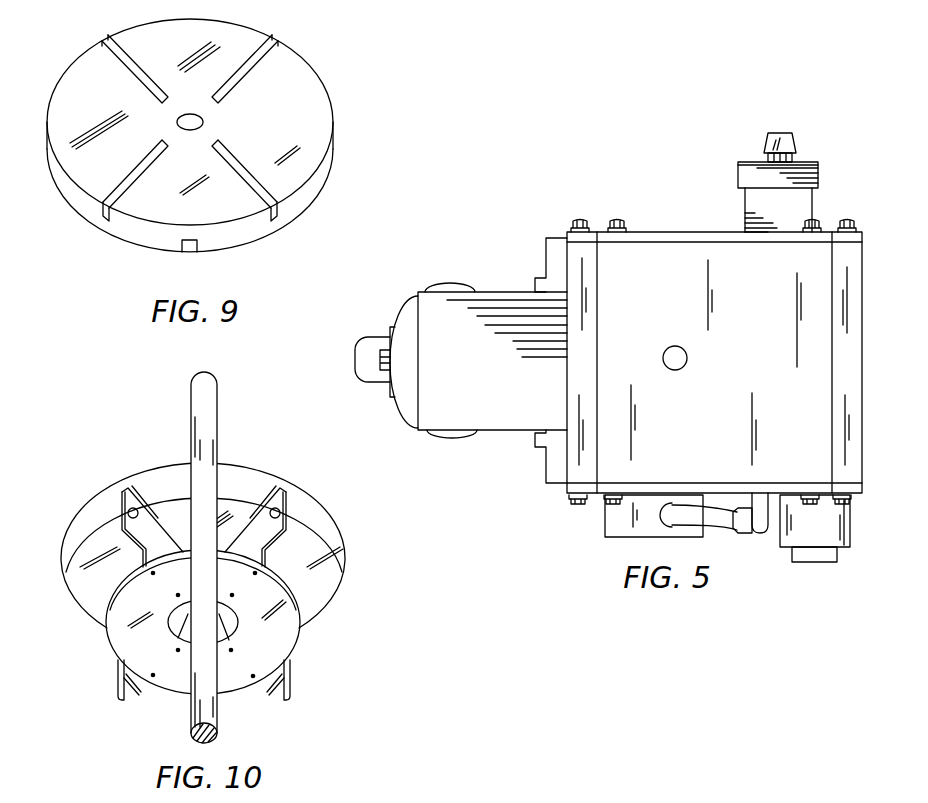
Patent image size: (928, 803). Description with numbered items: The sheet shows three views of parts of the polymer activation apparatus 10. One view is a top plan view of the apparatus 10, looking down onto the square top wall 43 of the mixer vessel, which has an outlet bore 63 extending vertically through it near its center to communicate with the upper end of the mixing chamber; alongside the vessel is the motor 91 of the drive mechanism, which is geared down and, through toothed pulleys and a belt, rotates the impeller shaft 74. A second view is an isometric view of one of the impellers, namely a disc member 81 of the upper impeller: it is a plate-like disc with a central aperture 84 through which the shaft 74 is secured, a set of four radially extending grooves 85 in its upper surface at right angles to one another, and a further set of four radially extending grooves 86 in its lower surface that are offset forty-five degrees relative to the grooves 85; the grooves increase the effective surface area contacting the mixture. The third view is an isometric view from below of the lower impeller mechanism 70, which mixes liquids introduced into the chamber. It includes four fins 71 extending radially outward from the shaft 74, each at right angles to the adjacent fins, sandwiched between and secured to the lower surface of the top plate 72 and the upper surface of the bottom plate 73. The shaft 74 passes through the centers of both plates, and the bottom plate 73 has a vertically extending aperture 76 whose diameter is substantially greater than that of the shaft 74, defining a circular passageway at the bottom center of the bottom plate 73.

In FIG. 5, the polymer activation apparatus 10 is at (618, 190).
In FIG. 5, the top wall 43 is at (630, 248).
In FIG. 5, the outlet bore 63 is at (687, 356).
In FIG. 5, the motor 91 is at (408, 396).
In FIG. 9, the disc member 81 is at (322, 162).
In FIG. 9, the central aperture 84 is at (203, 119).
In FIG. 9, the radially extending grooves 85 is at (112, 37).
In FIG. 9, the radially extending grooves 86 is at (197, 252).
In FIG. 10, the impeller mechanism 70 is at (80, 640).
In FIG. 10, the fins 71 is at (140, 489).
In FIG. 10, the top plate 72 is at (228, 478).
In FIG. 10, the bottom plate 73 is at (120, 638).
In FIG. 10, the shaft 74 is at (213, 404).
In FIG. 10, the aperture 76 is at (232, 649).